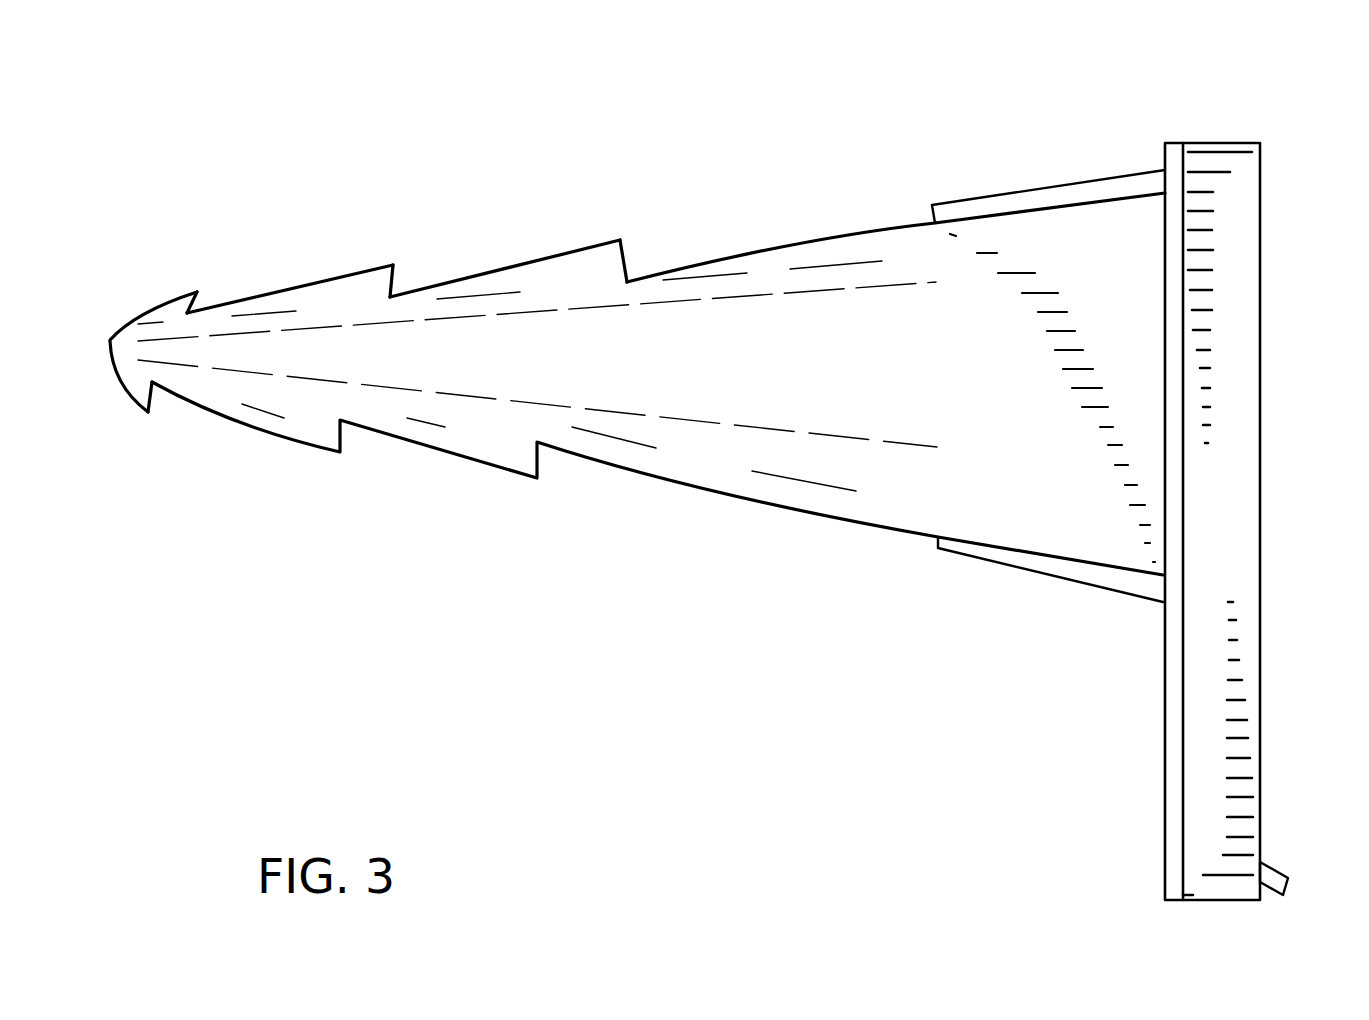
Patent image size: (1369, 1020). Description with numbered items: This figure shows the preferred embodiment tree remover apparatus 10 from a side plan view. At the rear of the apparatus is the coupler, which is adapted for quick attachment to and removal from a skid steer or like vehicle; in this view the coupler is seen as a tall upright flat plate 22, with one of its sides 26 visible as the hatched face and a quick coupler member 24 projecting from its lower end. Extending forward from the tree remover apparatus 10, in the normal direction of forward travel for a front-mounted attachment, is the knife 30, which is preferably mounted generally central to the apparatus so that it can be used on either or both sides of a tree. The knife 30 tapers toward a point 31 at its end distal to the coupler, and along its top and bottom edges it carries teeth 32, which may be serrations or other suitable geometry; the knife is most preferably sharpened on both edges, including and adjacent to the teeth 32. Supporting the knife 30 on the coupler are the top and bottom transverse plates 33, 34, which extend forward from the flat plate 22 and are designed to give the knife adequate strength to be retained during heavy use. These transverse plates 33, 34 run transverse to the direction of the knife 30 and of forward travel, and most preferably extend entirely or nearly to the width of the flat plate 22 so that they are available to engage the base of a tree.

The tree remover apparatus 10 is at (206, 108).
The flat plate 22 is at (1170, 833).
The quick coupler member 24 is at (1287, 877).
The side 26 is at (1229, 538).
The knife 30 is at (667, 493).
The point 31 is at (110, 342).
The teeth 32 is at (182, 288).
The top transverse plate 33 is at (975, 212).
The bottom transverse plate 34 is at (1017, 560).